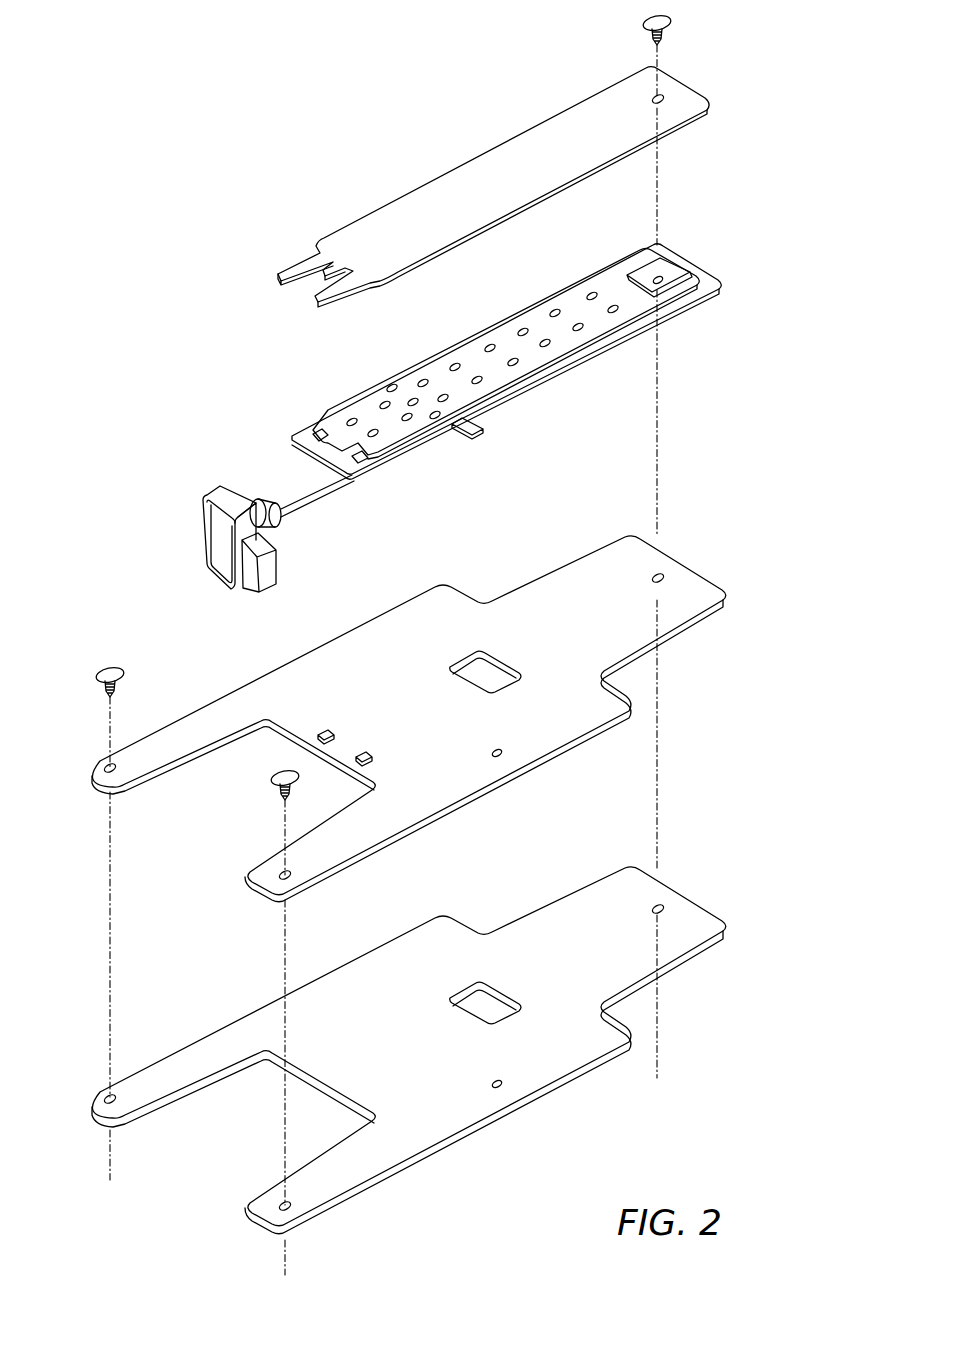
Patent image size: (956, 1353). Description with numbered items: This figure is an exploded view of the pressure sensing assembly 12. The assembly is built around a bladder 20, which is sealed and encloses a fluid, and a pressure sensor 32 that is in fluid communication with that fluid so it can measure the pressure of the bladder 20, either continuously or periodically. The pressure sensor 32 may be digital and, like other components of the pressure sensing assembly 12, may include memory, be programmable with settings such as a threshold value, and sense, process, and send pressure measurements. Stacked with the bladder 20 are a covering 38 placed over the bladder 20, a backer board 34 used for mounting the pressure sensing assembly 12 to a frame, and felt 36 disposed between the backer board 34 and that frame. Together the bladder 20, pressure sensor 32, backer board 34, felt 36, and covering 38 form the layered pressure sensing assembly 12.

The pressure sensing assembly 12 is at (150, 167).
The bladder 20 is at (610, 285).
The pressure sensor 32 is at (202, 533).
The backer board 34 is at (558, 583).
The felt 36 is at (558, 915).
The covering 38 is at (503, 157).